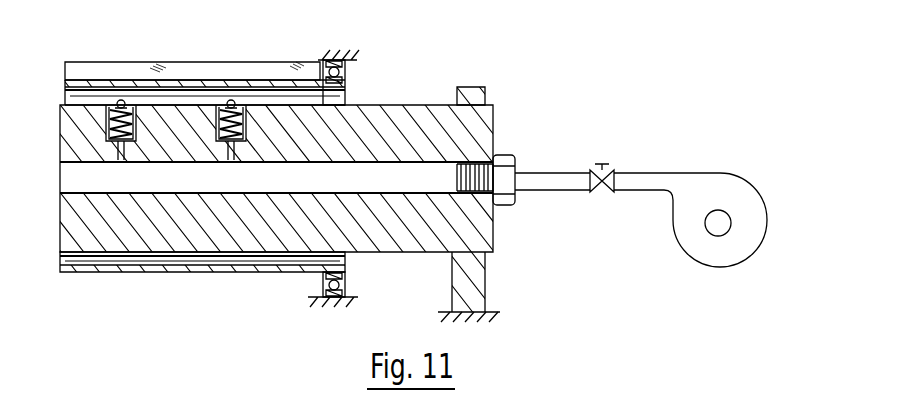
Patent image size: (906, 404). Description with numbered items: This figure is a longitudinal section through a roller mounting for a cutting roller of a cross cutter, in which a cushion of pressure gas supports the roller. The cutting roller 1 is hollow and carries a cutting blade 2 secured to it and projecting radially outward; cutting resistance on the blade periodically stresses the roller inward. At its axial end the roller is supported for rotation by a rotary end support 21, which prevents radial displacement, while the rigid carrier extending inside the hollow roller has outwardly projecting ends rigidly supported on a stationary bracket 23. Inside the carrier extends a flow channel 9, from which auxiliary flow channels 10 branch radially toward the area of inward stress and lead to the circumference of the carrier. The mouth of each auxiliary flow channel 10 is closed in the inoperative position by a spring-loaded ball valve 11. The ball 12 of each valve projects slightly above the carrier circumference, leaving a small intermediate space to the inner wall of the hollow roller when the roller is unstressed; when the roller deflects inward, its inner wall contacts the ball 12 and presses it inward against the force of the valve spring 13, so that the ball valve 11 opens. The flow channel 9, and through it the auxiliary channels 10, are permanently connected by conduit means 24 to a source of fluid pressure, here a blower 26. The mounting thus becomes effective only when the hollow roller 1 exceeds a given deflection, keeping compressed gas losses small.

The cutting roller 1 is at (93, 80).
The cutting blade 2 is at (253, 68).
The flow channel 9 is at (360, 180).
The auxiliary flow channel 10 is at (230, 162).
The spring-loaded ball valve 11 is at (216, 135).
The ball 12 is at (231, 103).
The valve spring 13 is at (218, 110).
The rotary end support 21 is at (336, 59).
The stationary bracket 23 is at (481, 88).
The conduit means 24 is at (548, 174).
The blower 26 is at (727, 185).